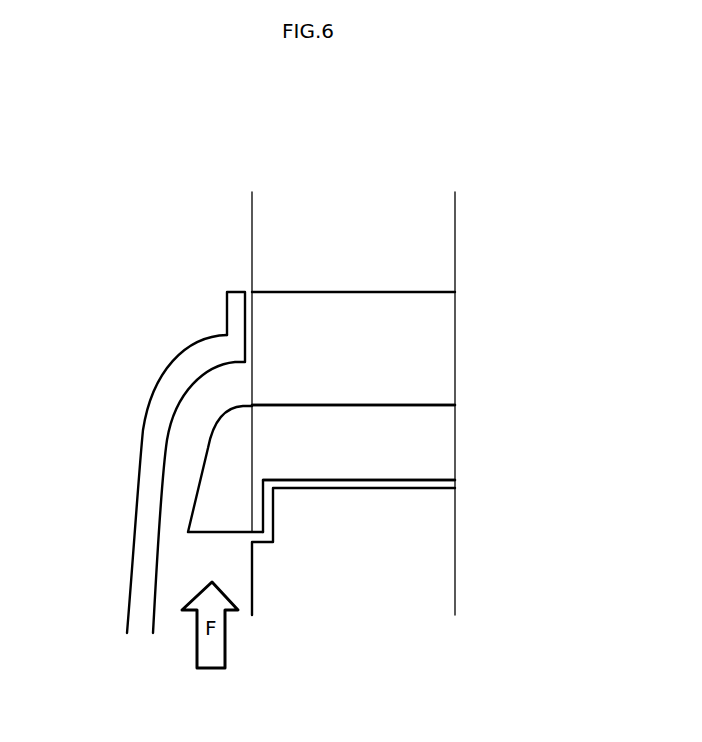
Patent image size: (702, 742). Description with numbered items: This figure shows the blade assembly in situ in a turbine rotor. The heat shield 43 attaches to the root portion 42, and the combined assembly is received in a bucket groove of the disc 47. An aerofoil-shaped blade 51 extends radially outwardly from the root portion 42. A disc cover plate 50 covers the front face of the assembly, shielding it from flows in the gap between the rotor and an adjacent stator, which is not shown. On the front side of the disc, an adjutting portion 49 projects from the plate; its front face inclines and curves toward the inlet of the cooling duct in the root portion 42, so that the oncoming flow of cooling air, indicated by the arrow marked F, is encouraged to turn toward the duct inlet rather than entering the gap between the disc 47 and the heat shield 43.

The root portion 42 is at (430, 298).
The heat shield 43 is at (430, 452).
The disc 47 is at (422, 563).
The adjutting portion 49 is at (209, 502).
The disc cover plate 50 is at (192, 351).
The aerofoil-shaped blade 51 is at (430, 237).